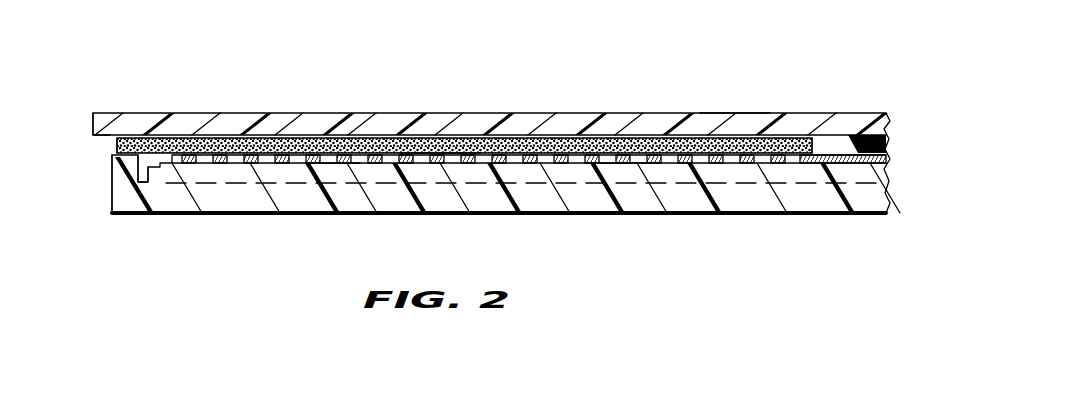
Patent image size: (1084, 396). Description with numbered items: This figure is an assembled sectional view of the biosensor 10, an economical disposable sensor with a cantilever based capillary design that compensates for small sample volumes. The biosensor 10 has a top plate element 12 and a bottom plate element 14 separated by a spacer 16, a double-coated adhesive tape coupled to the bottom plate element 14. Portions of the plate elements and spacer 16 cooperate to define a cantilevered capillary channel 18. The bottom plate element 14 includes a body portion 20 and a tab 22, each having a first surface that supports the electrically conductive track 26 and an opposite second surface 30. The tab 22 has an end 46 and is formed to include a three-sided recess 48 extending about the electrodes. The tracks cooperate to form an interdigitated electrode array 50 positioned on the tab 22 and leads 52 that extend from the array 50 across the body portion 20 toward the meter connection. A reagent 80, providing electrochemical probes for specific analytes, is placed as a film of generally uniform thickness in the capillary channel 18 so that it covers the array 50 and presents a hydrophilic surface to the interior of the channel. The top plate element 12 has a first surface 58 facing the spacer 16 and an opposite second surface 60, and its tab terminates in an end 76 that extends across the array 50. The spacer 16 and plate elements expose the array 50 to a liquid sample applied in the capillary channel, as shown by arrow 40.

The biosensor 10 is at (522, 105).
The top plate element 12 is at (660, 108).
The bottom plate element 14 is at (757, 192).
The spacer 16 is at (827, 130).
The cantilevered capillary channel 18 is at (233, 148).
The body portion 20 is at (857, 213).
The tab 22 is at (207, 213).
The electrically conductive track 26 is at (338, 163).
The second surface 30 is at (445, 213).
The arrow 40 is at (115, 145).
The end 46 is at (110, 193).
The recess 48 is at (147, 158).
The interdigitated electrode array 50 is at (365, 155).
The leads 52 is at (850, 157).
The first surface 58 is at (623, 152).
The second surface 60 is at (733, 108).
The end 76 is at (93, 122).
The reagent 80 is at (440, 147).